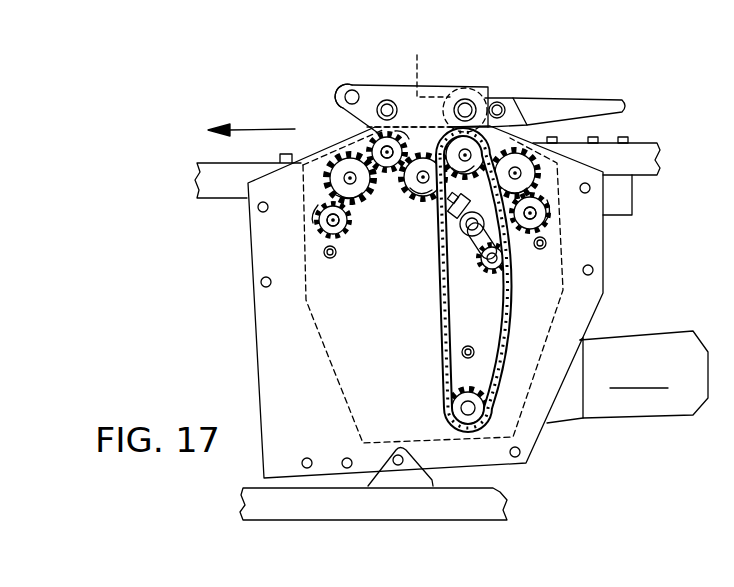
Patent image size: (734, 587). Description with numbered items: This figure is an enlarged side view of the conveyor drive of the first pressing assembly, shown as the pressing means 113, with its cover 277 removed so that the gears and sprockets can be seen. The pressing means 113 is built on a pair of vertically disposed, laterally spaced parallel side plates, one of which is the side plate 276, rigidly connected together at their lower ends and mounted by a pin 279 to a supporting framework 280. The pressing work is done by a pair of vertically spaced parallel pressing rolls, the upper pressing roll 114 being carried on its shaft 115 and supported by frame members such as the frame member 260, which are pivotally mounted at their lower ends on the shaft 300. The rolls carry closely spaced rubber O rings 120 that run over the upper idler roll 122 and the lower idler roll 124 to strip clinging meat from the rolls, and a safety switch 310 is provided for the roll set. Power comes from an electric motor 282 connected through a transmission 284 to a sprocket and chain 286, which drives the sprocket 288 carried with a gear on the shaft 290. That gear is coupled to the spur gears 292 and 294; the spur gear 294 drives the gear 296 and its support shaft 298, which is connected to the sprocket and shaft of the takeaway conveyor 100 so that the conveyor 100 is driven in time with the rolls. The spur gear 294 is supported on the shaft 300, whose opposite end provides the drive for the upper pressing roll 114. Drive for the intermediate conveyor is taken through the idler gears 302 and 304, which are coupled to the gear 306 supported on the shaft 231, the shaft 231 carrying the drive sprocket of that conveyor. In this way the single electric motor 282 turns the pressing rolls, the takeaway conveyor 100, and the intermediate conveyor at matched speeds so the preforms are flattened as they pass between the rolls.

The takeaway conveyor 100 is at (637, 142).
The pressing means 113 is at (357, 62).
The upper pressing roll 114 is at (462, 98).
The shaft of the roll 115 is at (470, 106).
The rubber O rings 120 is at (419, 68).
The upper idler roll 122 is at (387, 100).
The lower idler roll 124 is at (375, 143).
The shaft 231 is at (336, 224).
The frame member 260 is at (365, 93).
The side plate 276 is at (283, 342).
The cover 277 is at (315, 323).
The pin 279 is at (422, 416).
The supporting framework 280 is at (505, 496).
The electric motor 282 is at (644, 374).
The transmission 284 is at (568, 412).
The sprocket and chain 286 is at (461, 407).
The sprocket 288 is at (461, 186).
The shaft 290 is at (468, 152).
The spur gear 292 is at (430, 192).
The spur gear 294 is at (538, 177).
The gear 296 is at (548, 218).
The support shaft 298 is at (533, 216).
The shaft 300 is at (538, 162).
The idler gear 302 is at (377, 147).
The idler gear 304 is at (326, 170).
The gear 306 is at (322, 227).
The safety switch 310 is at (595, 100).